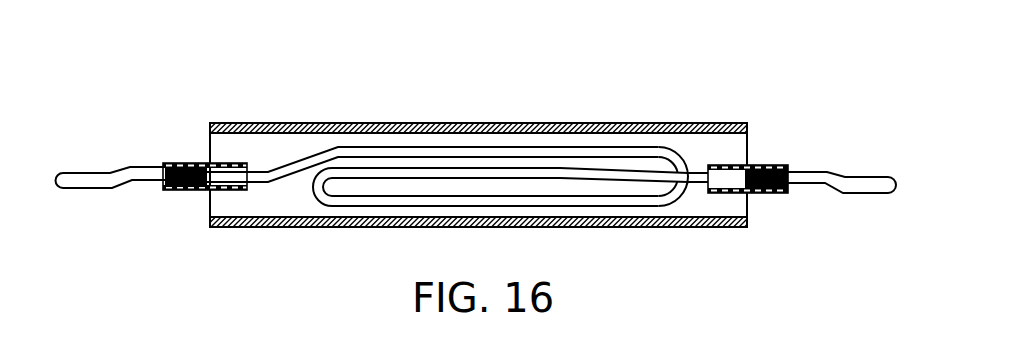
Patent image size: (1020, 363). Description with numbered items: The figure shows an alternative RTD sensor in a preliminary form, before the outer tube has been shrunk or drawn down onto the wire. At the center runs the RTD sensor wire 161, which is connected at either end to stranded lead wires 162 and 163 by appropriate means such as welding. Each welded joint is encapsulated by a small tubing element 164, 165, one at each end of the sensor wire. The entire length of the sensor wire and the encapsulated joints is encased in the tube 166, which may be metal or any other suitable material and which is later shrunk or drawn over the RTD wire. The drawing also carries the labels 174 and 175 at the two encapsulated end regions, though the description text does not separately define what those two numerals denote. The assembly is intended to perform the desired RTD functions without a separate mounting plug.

The RTD sensor wire 161 is at (582, 150).
The stranded lead wire 162 is at (120, 167).
The stranded lead wire 163 is at (822, 168).
The small tubing element 164 is at (180, 192).
The small tubing element 165 is at (772, 193).
The tube 166 is at (310, 123).
The left insulating sleeve 174 is at (200, 163).
The right insulating sleeve 175 is at (747, 152).